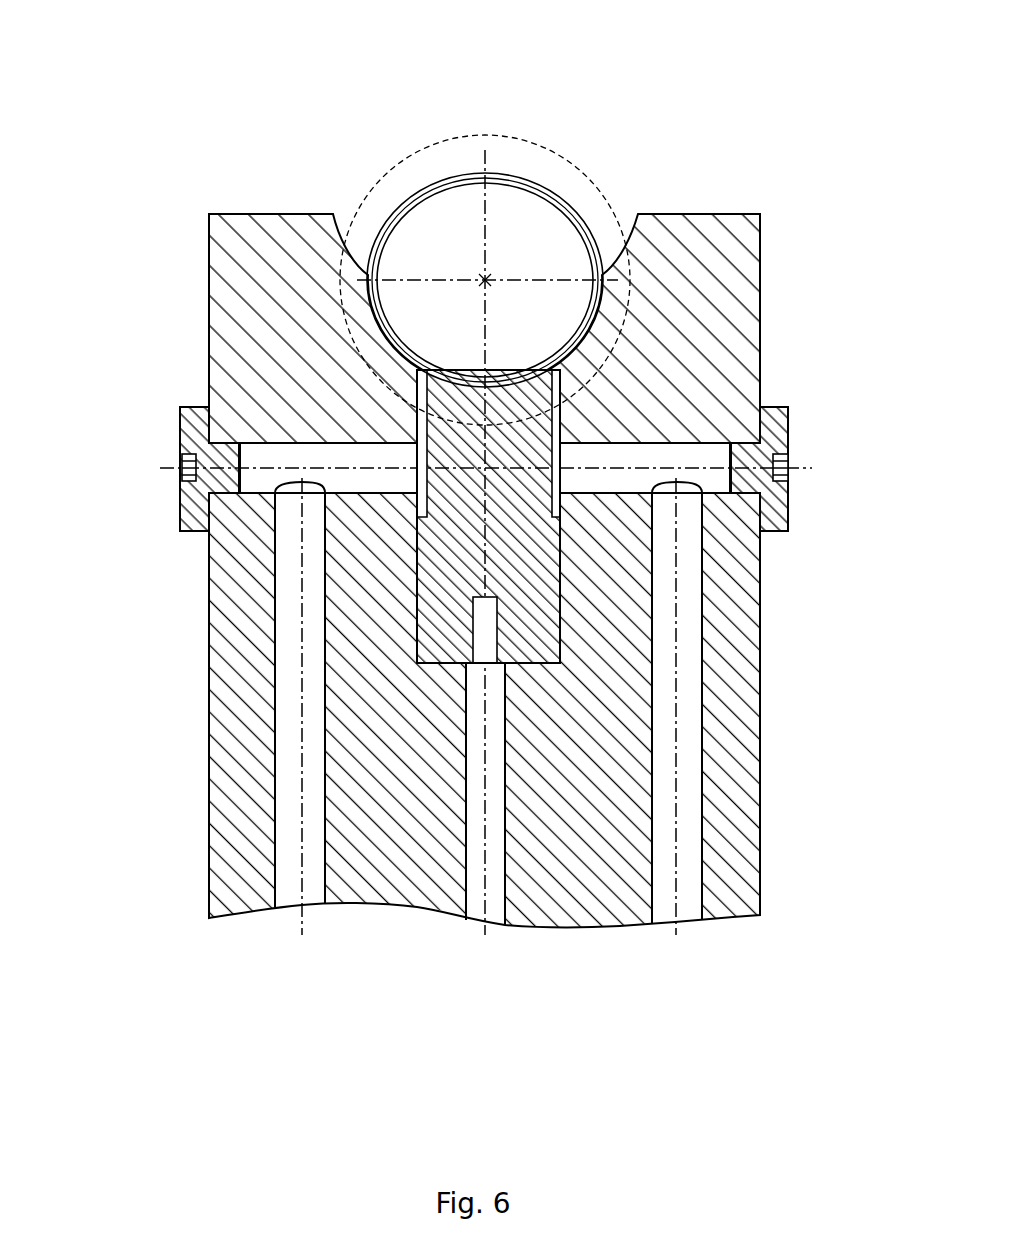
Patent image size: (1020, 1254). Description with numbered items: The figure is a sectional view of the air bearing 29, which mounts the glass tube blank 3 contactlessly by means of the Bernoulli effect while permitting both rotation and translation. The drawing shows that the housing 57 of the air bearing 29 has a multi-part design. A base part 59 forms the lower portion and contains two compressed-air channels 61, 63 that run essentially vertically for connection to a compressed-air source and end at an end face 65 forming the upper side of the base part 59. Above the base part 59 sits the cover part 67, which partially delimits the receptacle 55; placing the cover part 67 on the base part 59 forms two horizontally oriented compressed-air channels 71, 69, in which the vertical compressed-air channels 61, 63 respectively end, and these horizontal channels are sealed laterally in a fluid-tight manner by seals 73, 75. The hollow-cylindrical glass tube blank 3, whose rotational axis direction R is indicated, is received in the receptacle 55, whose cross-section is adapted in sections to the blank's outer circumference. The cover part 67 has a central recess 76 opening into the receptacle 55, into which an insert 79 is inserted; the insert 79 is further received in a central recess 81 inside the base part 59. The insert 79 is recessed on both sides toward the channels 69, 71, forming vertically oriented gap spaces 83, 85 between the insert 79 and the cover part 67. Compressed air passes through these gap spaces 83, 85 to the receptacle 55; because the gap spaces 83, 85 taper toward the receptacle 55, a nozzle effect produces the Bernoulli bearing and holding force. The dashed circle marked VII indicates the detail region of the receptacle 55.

The air bearing 29 is at (792, 104).
The glass tube blank 3 is at (444, 174).
The receptacle 55 is at (394, 188).
The rotational axis direction R is at (487, 278).
The detail view VII is at (600, 190).
The left upper die block 76 is at (210, 237).
The cover part 67 is at (760, 300).
The horizontal compressed-air channel 71 is at (258, 443).
The horizontal compressed-air channel 69 is at (672, 452).
The seal 73 is at (788, 430).
The end face 65 is at (788, 452).
The seal 75 is at (180, 513).
The housing 57 is at (778, 667).
The gap space 83 is at (720, 522).
The insert 79 is at (540, 580).
The central recess 81 is at (420, 632).
The gap space 85 is at (418, 517).
The compressed-air channel 61 is at (287, 743).
The compressed-air channel 63 is at (692, 727).
The base part 59 is at (735, 822).